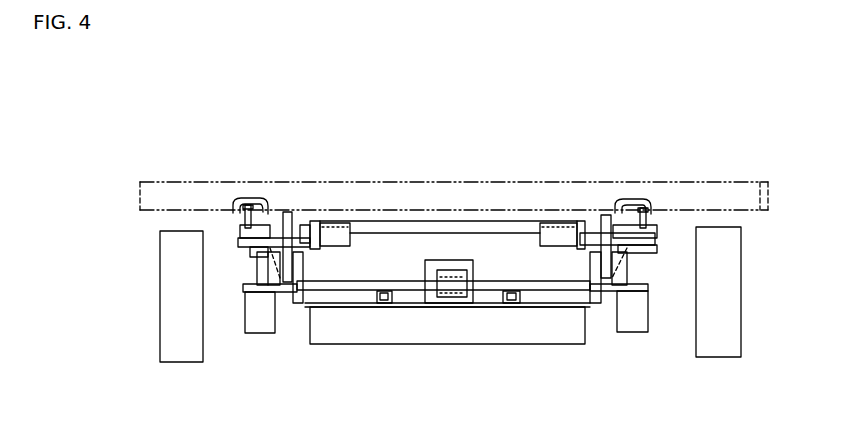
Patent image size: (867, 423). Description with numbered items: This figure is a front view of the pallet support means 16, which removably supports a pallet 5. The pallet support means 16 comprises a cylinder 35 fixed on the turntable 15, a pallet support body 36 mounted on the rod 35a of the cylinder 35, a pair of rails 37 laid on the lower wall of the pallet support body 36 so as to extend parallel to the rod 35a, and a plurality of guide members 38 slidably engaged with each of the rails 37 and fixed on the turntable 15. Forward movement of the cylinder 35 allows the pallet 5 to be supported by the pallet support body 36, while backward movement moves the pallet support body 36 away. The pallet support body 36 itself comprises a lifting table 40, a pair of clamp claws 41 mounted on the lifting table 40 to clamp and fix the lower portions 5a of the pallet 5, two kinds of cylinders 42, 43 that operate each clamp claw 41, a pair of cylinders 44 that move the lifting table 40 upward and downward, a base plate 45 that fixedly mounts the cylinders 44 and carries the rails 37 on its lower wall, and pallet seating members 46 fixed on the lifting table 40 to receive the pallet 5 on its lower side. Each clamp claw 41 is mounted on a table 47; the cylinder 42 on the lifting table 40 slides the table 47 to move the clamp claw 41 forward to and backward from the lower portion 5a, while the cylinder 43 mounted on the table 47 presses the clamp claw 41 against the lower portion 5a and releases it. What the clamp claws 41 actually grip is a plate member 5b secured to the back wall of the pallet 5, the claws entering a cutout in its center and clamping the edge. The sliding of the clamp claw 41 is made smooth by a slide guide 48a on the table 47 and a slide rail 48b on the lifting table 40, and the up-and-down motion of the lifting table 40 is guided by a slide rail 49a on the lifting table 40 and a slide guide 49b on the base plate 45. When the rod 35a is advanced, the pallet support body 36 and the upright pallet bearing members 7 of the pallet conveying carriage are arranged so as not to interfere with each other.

The pallet 5 is at (766, 182).
The lower portion of the pallet 5a is at (236, 222).
The plate member 5b is at (683, 210).
The pallet bearing member 7 is at (160, 278).
The turntable 15 is at (585, 337).
The pallet support means 16 is at (557, 142).
The cylinder 35 is at (433, 307).
The rod 35a is at (473, 270).
The pallet support body 36 is at (398, 207).
The rail 37 is at (385, 305).
The guide member 38 is at (382, 307).
The lifting table 40 is at (450, 227).
The clamp claw 41 is at (250, 198).
The cylinder 42 is at (343, 247).
The cylinder 43 is at (237, 257).
The cylinder 44 is at (245, 317).
The base plate 45 is at (375, 278).
The pallet seating member 46 is at (287, 217).
The table 47 is at (238, 233).
The slide guide 48a is at (238, 233).
The slide rail 48b is at (237, 240).
The slide rail 49a is at (305, 222).
The slide guide 49b is at (293, 307).